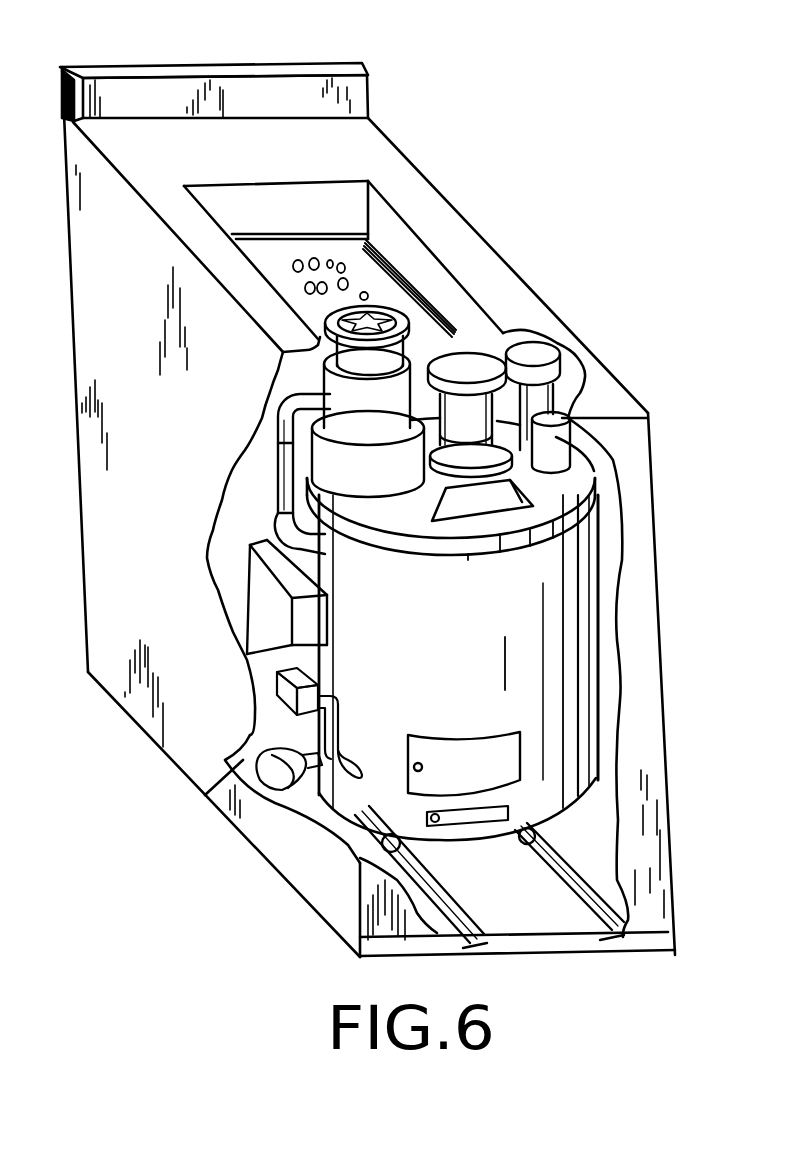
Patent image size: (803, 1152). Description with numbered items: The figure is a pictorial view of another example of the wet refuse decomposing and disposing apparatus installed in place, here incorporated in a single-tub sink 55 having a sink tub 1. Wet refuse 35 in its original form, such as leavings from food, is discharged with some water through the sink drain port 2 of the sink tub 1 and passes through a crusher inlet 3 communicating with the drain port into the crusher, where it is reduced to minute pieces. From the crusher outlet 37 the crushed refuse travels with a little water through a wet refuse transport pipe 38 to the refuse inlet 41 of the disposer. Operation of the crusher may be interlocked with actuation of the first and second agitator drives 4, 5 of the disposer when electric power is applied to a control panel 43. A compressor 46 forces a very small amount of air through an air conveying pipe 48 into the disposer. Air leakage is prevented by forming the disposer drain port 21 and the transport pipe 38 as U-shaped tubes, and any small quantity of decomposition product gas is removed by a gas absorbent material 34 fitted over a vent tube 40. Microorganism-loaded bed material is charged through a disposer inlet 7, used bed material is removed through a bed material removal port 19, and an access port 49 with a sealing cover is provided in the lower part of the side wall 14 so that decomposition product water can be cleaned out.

The sink tub 1 is at (345, 192).
The sink drain port 2 is at (384, 298).
The crusher inlet 3 is at (387, 359).
The first agitator drive 4 is at (501, 335).
The second agitator drive 5 is at (585, 420).
The disposer inlet 7 is at (597, 463).
The side wall 14 is at (598, 608).
The bed material removal port 19 is at (505, 777).
The disposer drain port 21 is at (205, 795).
The gas absorbent material 34 is at (550, 353).
The wet refuse 35 is at (316, 262).
The outlet 37 is at (283, 418).
The wet refuse transport pipe 38 is at (247, 447).
The vent tube 40 is at (573, 400).
The refuse inlet 41 is at (287, 540).
The control panel 43 is at (264, 583).
The compressor 46 is at (283, 693).
The air conveying pipe 48 is at (345, 760).
The access port 49 is at (453, 822).
The single-tub sink 55 is at (193, 66).